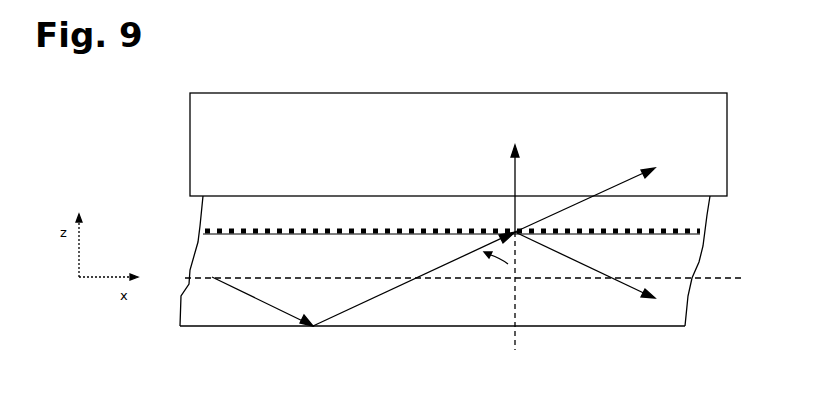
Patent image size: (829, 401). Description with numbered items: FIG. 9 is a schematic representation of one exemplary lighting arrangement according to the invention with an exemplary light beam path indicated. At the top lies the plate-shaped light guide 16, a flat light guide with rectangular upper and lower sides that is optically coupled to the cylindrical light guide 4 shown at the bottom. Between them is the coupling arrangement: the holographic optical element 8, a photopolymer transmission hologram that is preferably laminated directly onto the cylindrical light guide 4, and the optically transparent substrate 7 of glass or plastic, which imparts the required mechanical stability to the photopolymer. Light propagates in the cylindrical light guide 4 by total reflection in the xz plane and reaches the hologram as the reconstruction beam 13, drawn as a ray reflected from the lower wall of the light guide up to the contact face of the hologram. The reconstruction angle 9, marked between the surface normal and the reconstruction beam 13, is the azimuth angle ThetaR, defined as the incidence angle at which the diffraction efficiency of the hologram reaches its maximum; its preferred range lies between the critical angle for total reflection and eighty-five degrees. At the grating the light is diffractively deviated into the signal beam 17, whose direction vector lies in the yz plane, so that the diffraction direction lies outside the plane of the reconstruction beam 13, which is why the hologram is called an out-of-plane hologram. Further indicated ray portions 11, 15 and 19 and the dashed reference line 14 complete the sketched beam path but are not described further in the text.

The cylindrical light guide 4 is at (436, 273).
The substrate 7 is at (435, 190).
The holographic optical element 8 is at (429, 225).
The reconstruction angle 9 is at (516, 281).
The incident light beam 11 is at (262, 321).
The reconstruction beam 13 is at (414, 298).
The reference plane 14 is at (482, 265).
The reflected light beam 15 is at (585, 298).
The plate-shaped light guide 16 is at (434, 144).
The signal beam 17 is at (483, 247).
The diffracted light beam 19 is at (585, 191).